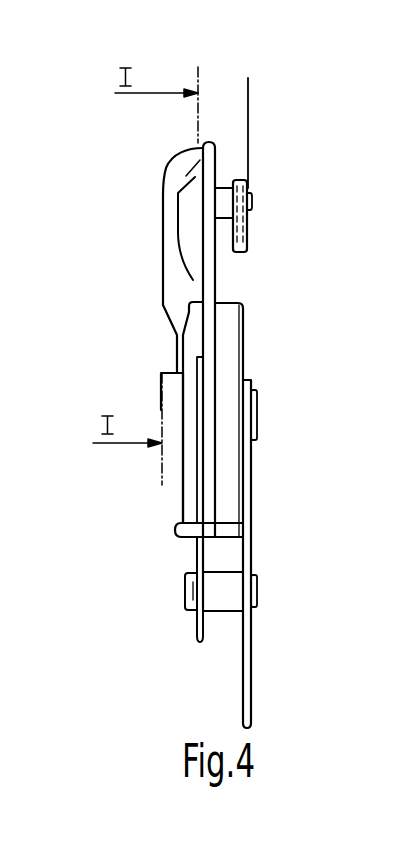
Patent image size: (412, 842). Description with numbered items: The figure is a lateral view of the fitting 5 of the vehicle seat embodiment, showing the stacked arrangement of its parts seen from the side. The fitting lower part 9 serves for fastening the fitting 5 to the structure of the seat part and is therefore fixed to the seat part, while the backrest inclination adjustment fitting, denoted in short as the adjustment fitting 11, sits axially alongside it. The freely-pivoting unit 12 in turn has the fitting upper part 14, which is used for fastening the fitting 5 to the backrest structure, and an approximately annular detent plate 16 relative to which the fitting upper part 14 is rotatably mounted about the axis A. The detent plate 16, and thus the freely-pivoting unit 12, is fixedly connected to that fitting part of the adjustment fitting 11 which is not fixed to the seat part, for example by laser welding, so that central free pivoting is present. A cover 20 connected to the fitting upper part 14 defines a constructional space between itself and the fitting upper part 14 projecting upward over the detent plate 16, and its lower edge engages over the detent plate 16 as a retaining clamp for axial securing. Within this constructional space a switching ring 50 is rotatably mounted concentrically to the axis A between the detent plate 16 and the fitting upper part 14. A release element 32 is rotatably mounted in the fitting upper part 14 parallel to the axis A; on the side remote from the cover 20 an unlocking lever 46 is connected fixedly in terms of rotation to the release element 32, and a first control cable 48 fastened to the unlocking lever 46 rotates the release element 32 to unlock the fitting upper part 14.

The fitting 5 is at (163, 558).
The fitting lower part 9 is at (245, 685).
The adjustment fitting 11 is at (226, 370).
The freely-pivoting unit 12 is at (161, 298).
The fitting upper part 14 is at (208, 277).
The detent plate 16 is at (190, 493).
The cover 20 is at (188, 228).
The release element 32 is at (225, 212).
The unlocking lever 46 is at (248, 220).
The first control cable 48 is at (248, 105).
The switching ring 50 is at (200, 442).